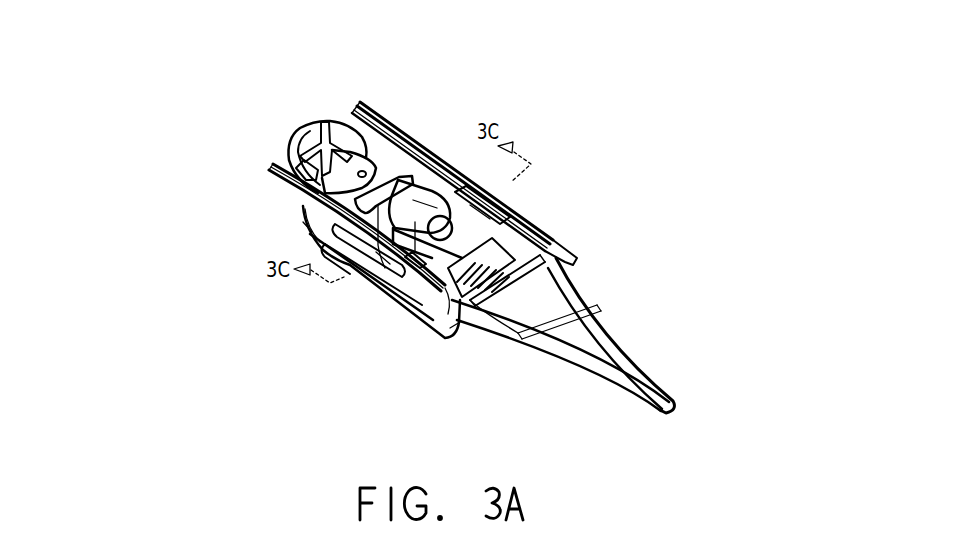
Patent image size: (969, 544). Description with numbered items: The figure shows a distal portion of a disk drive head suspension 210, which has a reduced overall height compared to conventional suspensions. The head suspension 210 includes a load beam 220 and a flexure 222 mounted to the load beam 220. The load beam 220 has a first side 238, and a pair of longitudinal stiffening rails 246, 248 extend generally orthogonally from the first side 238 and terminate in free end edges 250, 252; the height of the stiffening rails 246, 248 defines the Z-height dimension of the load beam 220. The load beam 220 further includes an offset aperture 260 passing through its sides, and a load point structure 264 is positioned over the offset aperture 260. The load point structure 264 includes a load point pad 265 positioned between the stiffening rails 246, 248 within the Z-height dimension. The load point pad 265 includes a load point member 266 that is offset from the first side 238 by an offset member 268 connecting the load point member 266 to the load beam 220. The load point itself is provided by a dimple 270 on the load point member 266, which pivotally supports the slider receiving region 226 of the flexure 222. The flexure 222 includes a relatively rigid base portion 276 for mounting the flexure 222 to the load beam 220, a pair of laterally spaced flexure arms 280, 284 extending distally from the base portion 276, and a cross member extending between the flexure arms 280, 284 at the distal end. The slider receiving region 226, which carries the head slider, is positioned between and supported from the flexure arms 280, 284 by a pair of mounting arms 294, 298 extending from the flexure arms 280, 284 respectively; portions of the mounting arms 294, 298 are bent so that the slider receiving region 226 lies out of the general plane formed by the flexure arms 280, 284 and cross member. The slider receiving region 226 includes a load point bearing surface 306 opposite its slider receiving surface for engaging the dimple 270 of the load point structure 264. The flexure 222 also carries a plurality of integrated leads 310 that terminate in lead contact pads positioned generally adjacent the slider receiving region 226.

The disk drive head suspension 210 is at (287, 50).
The load beam 220 is at (368, 96).
The flexure 222 is at (296, 205).
The slider receiving region 226 is at (525, 212).
The first side 238 is at (590, 313).
The longitudinal stiffening rail 246 is at (303, 212).
The longitudinal stiffening rail 248 is at (565, 272).
The free end edge 250 is at (492, 305).
The free end edge 252 is at (597, 335).
The offset aperture 260 is at (425, 290).
The load point structure 264 is at (505, 147).
The load point pad 265 is at (389, 184).
The load point member 266 is at (462, 170).
The offset member 268 is at (383, 258).
The dimple 270 is at (510, 183).
The base portion 276 is at (288, 149).
The flexure arm 280 is at (307, 227).
The flexure arm 284 is at (558, 240).
The mounting arm 294 is at (458, 328).
The mounting arm 298 is at (573, 317).
The load point bearing surface 306 is at (522, 328).
The integrated leads 310 is at (345, 262).